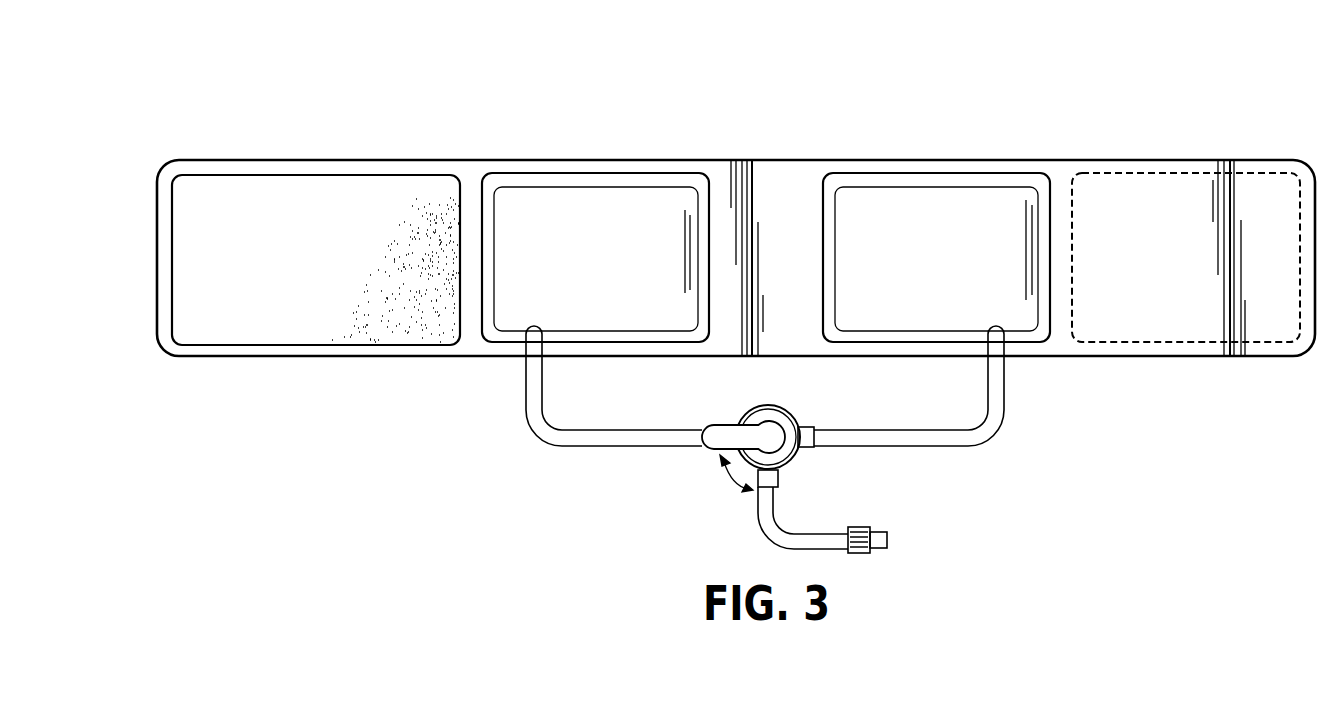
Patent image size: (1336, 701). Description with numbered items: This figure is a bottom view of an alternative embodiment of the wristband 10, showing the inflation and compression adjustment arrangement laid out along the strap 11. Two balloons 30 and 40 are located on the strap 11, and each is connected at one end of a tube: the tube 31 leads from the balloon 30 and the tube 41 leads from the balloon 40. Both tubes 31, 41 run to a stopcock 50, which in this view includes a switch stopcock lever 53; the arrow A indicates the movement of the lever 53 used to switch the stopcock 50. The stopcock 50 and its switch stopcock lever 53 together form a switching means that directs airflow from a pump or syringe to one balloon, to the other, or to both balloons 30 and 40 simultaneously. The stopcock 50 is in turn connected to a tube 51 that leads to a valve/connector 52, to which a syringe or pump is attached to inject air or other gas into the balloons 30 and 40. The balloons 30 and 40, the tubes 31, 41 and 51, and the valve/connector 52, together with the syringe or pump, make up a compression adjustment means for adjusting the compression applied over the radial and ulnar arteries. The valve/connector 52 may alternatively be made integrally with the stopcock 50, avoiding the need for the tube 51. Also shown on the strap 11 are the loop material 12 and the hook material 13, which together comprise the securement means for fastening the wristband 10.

The wristband 10 is at (434, 113).
The strap 11 is at (768, 160).
The loop material 12 is at (315, 175).
The hook material 13 is at (1187, 173).
The balloon 30 is at (597, 173).
The tube 31 is at (525, 400).
The balloon 40 is at (936, 173).
The tube 41 is at (1005, 401).
The stopcock 50 is at (785, 409).
The tube 51 is at (817, 532).
The valve/connector 52 is at (857, 526).
The switch stopcock lever 53 is at (709, 425).
The handle rotation direction A is at (730, 481).